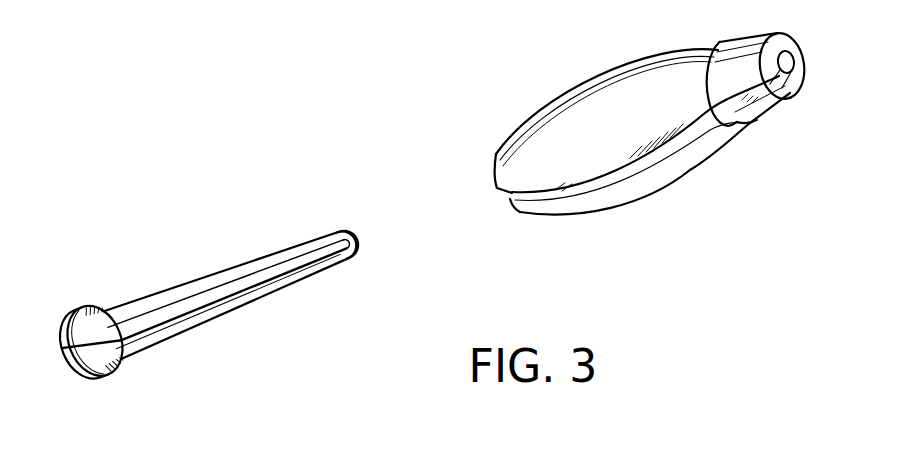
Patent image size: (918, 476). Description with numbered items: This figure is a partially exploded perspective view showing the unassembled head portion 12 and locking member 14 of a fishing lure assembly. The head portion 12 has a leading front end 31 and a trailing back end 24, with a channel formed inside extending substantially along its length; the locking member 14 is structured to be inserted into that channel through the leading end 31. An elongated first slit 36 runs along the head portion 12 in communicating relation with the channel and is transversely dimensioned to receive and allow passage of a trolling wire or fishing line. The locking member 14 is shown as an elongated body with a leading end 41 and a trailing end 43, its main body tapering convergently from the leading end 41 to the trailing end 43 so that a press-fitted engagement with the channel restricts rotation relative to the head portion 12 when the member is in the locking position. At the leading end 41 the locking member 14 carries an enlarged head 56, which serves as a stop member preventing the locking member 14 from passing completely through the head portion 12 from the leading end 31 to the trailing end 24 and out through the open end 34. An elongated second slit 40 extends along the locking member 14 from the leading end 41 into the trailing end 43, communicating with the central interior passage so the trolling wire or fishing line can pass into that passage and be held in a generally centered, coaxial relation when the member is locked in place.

The head portion 12 is at (568, 97).
The locking member 14 is at (228, 250).
The trailing end 24 is at (770, 104).
The leading front end 31 is at (493, 210).
The open end 34 is at (790, 63).
The first slit 36 is at (613, 181).
The second slit 40 is at (257, 278).
The leading end 41 is at (64, 368).
The trailing end 43 is at (354, 221).
The enlarged head 56 is at (116, 376).